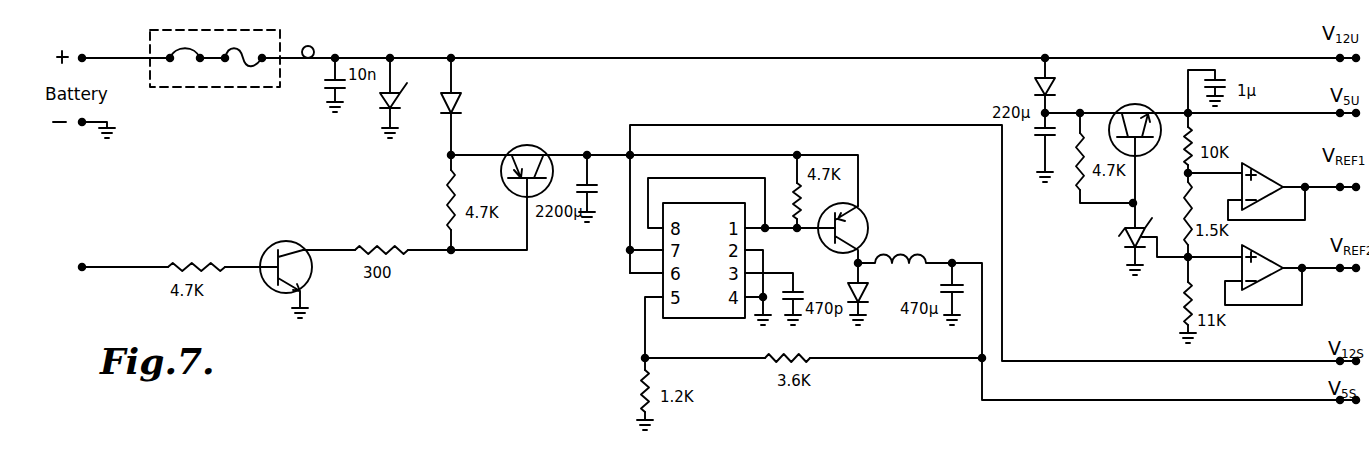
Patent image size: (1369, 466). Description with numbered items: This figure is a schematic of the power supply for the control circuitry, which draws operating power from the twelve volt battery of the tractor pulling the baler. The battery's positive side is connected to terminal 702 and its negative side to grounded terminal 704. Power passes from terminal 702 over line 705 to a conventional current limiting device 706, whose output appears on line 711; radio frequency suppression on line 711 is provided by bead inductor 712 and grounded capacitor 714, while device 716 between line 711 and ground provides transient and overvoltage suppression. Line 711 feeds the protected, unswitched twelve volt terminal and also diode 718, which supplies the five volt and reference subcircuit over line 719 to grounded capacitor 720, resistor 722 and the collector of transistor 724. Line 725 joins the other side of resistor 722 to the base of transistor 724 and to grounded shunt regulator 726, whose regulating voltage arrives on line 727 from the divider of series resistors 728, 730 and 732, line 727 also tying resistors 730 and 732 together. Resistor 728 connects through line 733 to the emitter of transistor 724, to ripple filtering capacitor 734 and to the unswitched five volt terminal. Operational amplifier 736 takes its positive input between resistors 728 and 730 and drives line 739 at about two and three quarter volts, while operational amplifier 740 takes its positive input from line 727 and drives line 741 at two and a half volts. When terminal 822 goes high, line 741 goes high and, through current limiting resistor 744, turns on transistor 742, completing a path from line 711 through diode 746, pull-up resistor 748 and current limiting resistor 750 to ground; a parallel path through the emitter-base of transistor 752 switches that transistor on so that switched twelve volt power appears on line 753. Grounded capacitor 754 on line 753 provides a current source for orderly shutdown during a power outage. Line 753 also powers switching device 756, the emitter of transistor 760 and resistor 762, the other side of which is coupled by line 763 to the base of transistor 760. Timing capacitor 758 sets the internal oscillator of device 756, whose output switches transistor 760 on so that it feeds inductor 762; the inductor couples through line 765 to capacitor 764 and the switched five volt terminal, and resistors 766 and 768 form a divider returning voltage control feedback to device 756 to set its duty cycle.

The terminal 702 is at (84, 55).
The terminal 704 is at (82, 126).
The line 705 is at (113, 57).
The current limiting device 706 is at (225, 90).
The line 711 is at (553, 58).
The bead inductor 712 is at (312, 46).
The grounded capacitor 714 is at (324, 90).
The transient and overvoltage suppression device 716 is at (385, 108).
The diode 718 is at (1036, 86).
The line 719 is at (1062, 113).
The grounded capacitor 720 is at (1040, 136).
The resistor 722 is at (1077, 180).
The transistor 724 is at (1135, 104).
The line 725 is at (1105, 205).
The shunt regulator 726 is at (1126, 243).
The line 727 is at (1162, 268).
The resistor 728 is at (1192, 124).
The resistor 730 is at (1187, 198).
The resistor 732 is at (1180, 310).
The line 733 is at (1256, 114).
The capacitor 734 is at (1222, 68).
The operational amplifier 736 is at (1264, 175).
The line 739 is at (1315, 190).
The operational amplifier 740 is at (1264, 258).
The line 741 is at (141, 271).
The transistor 742 is at (285, 242).
The current limiting resistor 744 is at (200, 264).
The diode 746 is at (461, 104).
The pull-up resistor 748 is at (448, 205).
The current limiting resistor 750 is at (370, 247).
The transistor 752 is at (527, 145).
The line 753 is at (910, 124).
The grounded capacitor 754 is at (603, 180).
The switching device 756 is at (660, 283).
The capacitor 758 is at (800, 292).
The transistor 760 is at (863, 220).
The resistor / inductor 762 is at (790, 178).
The line 763 is at (696, 181).
The capacitor 764 is at (962, 274).
The line 765 is at (980, 393).
The resistor 766 is at (773, 362).
The grounded resistor 768 is at (641, 384).
The terminal 822 is at (83, 263).